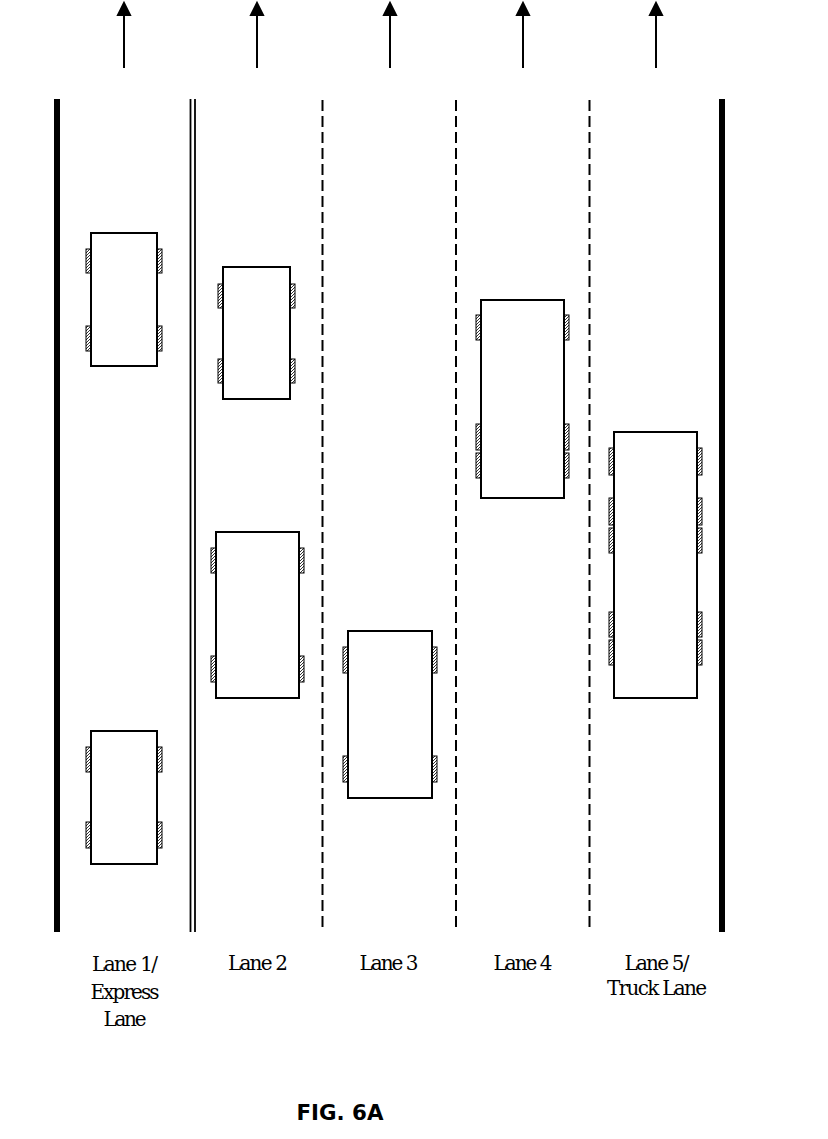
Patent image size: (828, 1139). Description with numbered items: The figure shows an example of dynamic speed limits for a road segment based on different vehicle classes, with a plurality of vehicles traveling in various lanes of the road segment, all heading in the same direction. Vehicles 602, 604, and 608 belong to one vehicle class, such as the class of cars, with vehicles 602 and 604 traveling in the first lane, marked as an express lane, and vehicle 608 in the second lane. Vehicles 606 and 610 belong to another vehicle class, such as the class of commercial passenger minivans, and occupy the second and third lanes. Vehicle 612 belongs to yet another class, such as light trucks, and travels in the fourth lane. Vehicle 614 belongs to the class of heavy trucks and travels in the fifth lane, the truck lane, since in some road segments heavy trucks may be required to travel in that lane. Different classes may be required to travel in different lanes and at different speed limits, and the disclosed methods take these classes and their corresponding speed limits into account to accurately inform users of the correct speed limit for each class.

The vehicle 602 is at (108, 731).
The vehicle 604 is at (106, 232).
The vehicle 606 is at (240, 531).
The vehicle 608 is at (241, 267).
The vehicle 610 is at (375, 631).
The vehicle 612 is at (506, 300).
The vehicle 614 is at (640, 432).